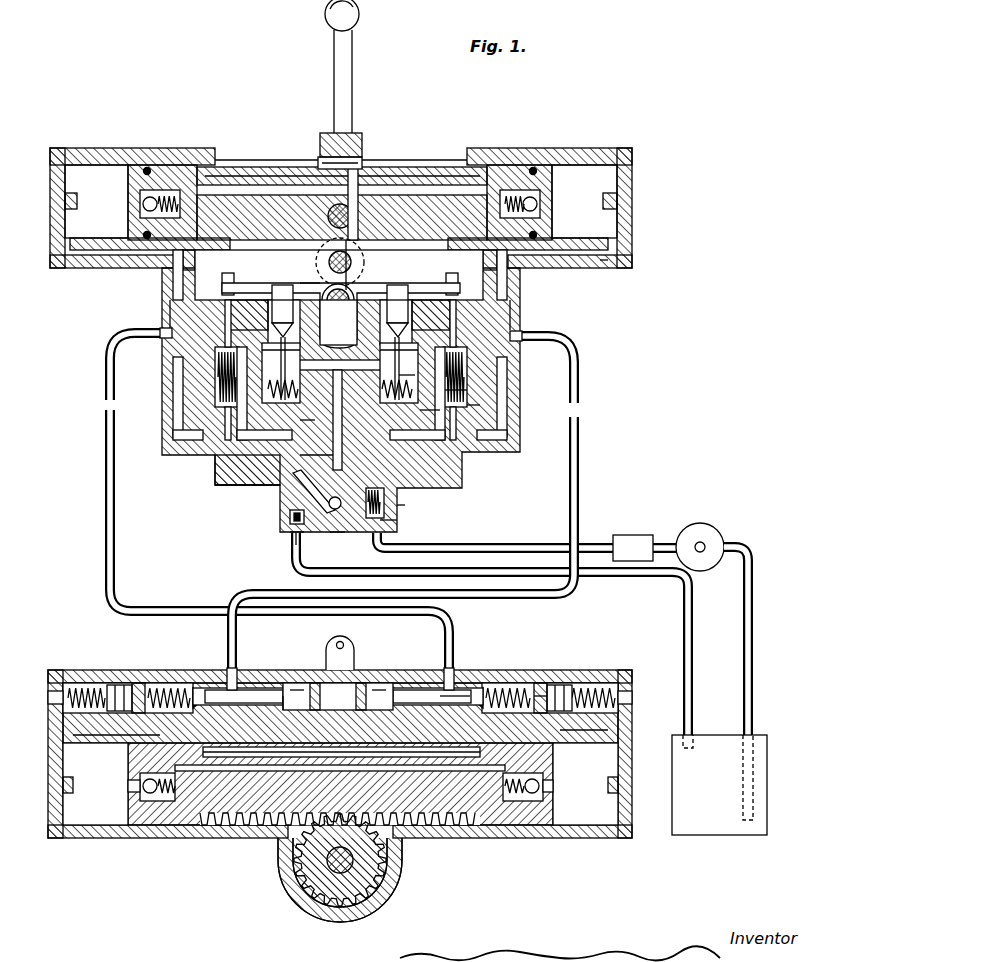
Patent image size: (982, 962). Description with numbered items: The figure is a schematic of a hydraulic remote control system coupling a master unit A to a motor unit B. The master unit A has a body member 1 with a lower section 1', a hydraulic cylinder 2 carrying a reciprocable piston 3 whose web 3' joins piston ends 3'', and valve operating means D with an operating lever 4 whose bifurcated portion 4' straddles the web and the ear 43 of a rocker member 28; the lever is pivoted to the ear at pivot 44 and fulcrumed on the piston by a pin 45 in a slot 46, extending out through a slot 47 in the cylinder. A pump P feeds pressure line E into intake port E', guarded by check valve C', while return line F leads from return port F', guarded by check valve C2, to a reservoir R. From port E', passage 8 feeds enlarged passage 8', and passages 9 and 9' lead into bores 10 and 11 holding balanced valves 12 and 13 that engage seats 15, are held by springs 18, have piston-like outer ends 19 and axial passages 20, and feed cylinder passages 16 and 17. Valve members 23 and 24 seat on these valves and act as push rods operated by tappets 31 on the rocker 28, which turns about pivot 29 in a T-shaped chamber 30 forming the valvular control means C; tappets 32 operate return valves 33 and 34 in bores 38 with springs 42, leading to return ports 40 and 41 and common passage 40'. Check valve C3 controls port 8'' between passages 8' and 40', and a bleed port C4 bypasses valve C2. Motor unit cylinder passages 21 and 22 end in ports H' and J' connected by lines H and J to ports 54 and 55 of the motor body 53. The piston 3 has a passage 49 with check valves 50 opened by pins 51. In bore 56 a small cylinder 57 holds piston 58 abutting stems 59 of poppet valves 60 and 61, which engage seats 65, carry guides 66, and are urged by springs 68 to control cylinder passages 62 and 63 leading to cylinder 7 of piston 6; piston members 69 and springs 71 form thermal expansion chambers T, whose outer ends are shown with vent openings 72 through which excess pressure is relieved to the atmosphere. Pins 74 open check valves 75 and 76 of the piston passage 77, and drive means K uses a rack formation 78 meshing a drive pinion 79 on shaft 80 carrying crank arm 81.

The master unit A is at (80, 146).
The motor unit B is at (58, 758).
The body member 1 is at (295, 400).
The hydraulic cylinder 2 is at (612, 152).
The piston 3 is at (519, 173).
The web 3' is at (342, 147).
The piston ends 3'' is at (355, 167).
The operating lever 4 is at (350, 120).
The bifurcated portion 4' is at (321, 141).
The piston 6 is at (192, 822).
The cylinder 7 is at (102, 826).
The passage 8 is at (342, 525).
The enlarged passage 8' is at (316, 454).
The port 8'' is at (305, 546).
The passage 9 is at (340, 335).
The passage 9' is at (348, 402).
The bore 10 is at (264, 393).
The bore 11 is at (400, 393).
The balanced valve 12 is at (312, 410).
The balanced valve 13 is at (418, 385).
The seats 15 is at (340, 388).
The cylinder passage 16 is at (82, 270).
The cylinder passage 17 is at (598, 262).
The springs 18 is at (430, 423).
The piston-like outer ends 19 is at (337, 354).
The passage 20 is at (340, 315).
The motor unit cylinder passage 21 is at (172, 330).
The motor unit cylinder passage 22 is at (520, 330).
The valve member 23 is at (288, 300).
The valve member 24 is at (402, 292).
The rocker member 28 is at (310, 283).
The pivot 29 is at (338, 309).
The T-shaped chamber 30 is at (176, 293).
The tappets 31 is at (275, 290).
The tappets 32 is at (228, 288).
The return valve 33 is at (218, 357).
The return valve 34 is at (458, 360).
The bores 38 is at (460, 386).
The return port 40 is at (228, 470).
The common passage 40' is at (242, 497).
The return port 41 is at (502, 440).
The springs 42 is at (478, 412).
The ear 43 is at (352, 270).
The pivot 44 is at (336, 258).
The pin 45 is at (352, 214).
The slot 46 is at (328, 140).
The slot 47 is at (415, 160).
The passage 49 is at (212, 190).
The check valves 50 is at (572, 186).
The pins 51 is at (63, 200).
The body 53 is at (68, 668).
The port 54 is at (442, 682).
The port 55 is at (234, 682).
The bore 56 is at (168, 686).
The small cylinder 57 is at (276, 686).
The piston 58 is at (298, 686).
The stems 59 is at (236, 688).
The poppet valve 60 is at (492, 686).
The poppet valve 61 is at (198, 688).
The cylinder passage 62 is at (622, 724).
The cylinder passage 63 is at (72, 733).
The seats 65 is at (222, 686).
The guides 66 is at (458, 690).
The springs 68 is at (534, 688).
The piston members 69 is at (118, 684).
The springs 71 is at (90, 686).
The port 72 is at (58, 697).
The pins 74 is at (72, 788).
The check valve 75 is at (554, 784).
The check valve 76 is at (128, 784).
The passage 77 is at (440, 780).
The rack formation 78 is at (226, 828).
The drive pinion 79 is at (380, 870).
The shaft 80 is at (336, 874).
The crank arm 81 is at (354, 640).
The valvular control means C is at (341, 299).
The check valve C' is at (410, 532).
The check valve C2 is at (288, 520).
The check valve C3 is at (339, 553).
The bleed port C4 is at (282, 505).
The valve operating means D is at (362, 128).
The pressure line E is at (519, 554).
The intake port E' is at (396, 508).
The return line F is at (473, 634).
The return port F' is at (273, 546).
The line H is at (261, 500).
The port H' is at (128, 330).
The lower section 1' is at (427, 512).
The line J is at (425, 502).
The port J' is at (546, 326).
The drive means K is at (292, 878).
The pump P is at (706, 528).
The reservoir R is at (705, 822).
The thermal expansion chambers T is at (62, 680).